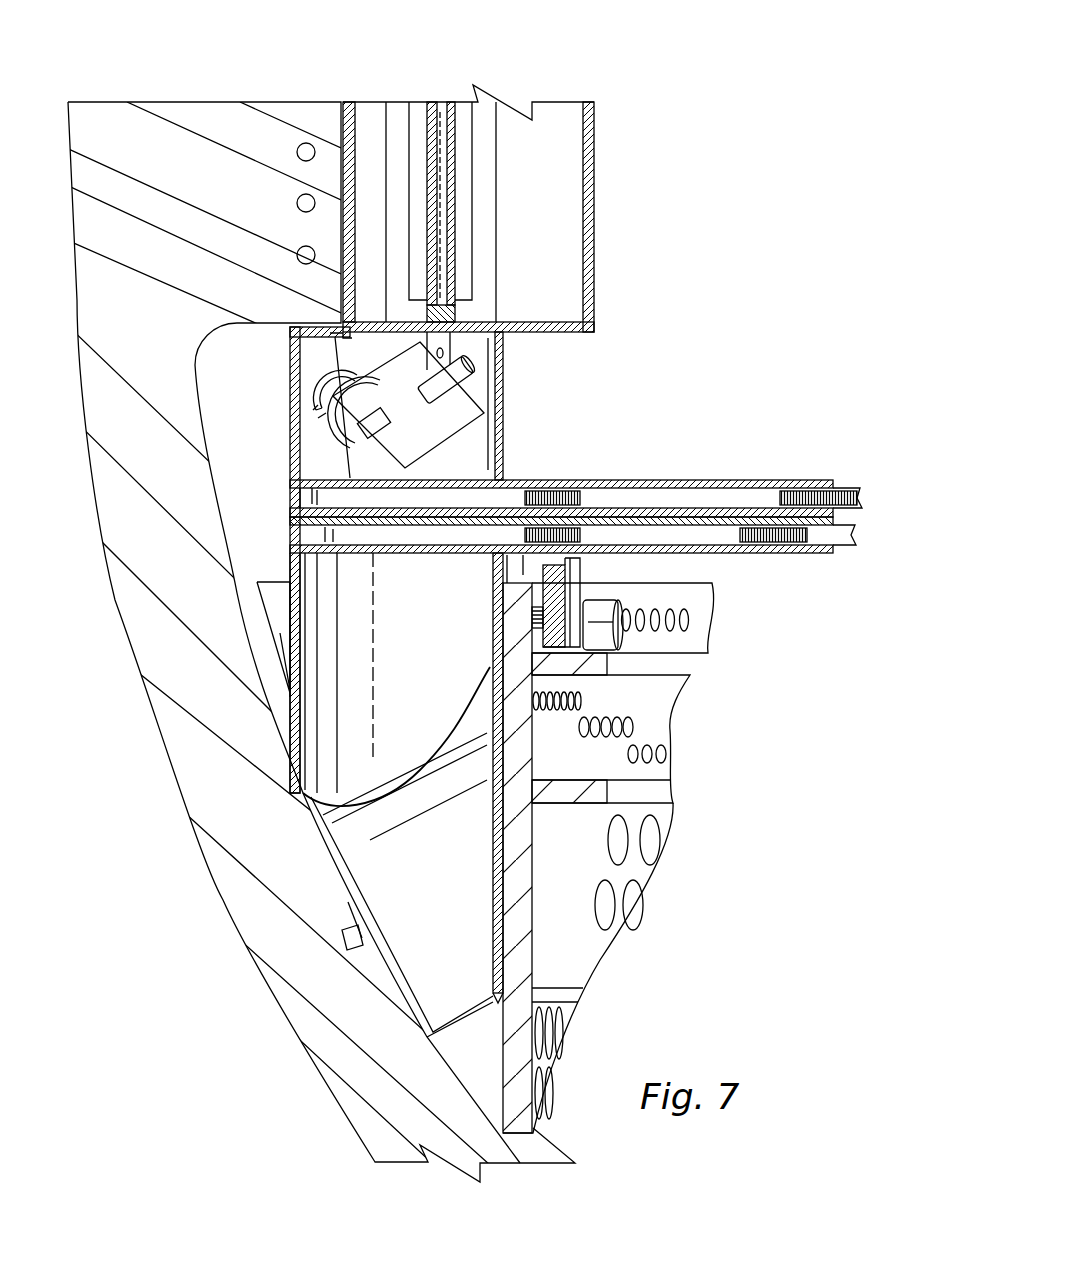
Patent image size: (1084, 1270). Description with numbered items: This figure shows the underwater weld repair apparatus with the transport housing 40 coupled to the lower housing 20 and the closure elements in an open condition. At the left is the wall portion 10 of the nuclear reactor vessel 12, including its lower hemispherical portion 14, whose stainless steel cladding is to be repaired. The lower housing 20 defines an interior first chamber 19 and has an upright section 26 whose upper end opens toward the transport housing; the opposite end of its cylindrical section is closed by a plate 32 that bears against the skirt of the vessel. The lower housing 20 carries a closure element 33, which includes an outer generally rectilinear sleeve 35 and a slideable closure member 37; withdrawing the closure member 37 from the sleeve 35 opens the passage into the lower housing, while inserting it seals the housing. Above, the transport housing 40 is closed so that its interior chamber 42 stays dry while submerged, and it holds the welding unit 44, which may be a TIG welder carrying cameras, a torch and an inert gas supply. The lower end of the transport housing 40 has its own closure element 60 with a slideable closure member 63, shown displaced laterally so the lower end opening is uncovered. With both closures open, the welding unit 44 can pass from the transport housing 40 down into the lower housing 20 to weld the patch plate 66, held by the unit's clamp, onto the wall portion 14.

The wall portion 10 is at (188, 140).
The nuclear reactor vessel 12 is at (716, 118).
The lower hemispherical portion 14 is at (237, 890).
The first chamber 19 is at (396, 638).
The lower housing 20 is at (447, 890).
The upright section 26 is at (289, 602).
The plate 32 is at (497, 748).
The closure element 33 is at (645, 556).
The sleeve 35 is at (805, 548).
The closure member 37 is at (725, 532).
The transport housing 40 is at (590, 243).
The interior chamber 42 is at (467, 450).
The welding unit 44 is at (462, 408).
The closure element 60 is at (717, 480).
The closure member 63 is at (752, 498).
The patch plate 66 is at (367, 453).